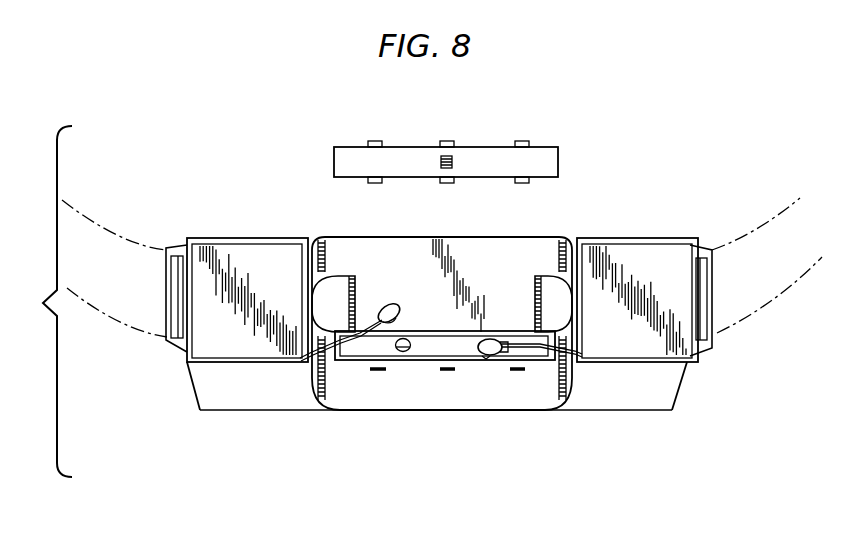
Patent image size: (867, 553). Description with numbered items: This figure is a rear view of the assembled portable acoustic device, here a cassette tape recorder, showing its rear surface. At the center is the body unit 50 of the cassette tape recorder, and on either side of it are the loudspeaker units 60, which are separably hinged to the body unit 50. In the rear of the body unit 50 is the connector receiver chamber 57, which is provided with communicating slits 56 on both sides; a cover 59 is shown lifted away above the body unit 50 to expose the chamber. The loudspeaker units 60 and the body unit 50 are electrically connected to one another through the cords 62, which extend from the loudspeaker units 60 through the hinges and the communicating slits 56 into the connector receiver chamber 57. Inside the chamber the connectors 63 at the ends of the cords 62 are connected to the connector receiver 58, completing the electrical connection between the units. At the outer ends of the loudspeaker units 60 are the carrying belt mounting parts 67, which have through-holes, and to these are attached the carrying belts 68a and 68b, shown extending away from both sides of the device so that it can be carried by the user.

The body unit 50 is at (444, 396).
The communicating slits 56 is at (330, 396).
The connector receiver chamber 57 is at (427, 347).
The connector receiver 58 is at (403, 353).
The cover 59 is at (474, 146).
The loudspeaker units 60 is at (253, 404).
The cords 62 is at (360, 398).
The connectors 63 is at (387, 304).
The carrying belt mounting parts 67 is at (178, 350).
The carrying belt 68a is at (104, 313).
The carrying belt 68b is at (775, 300).